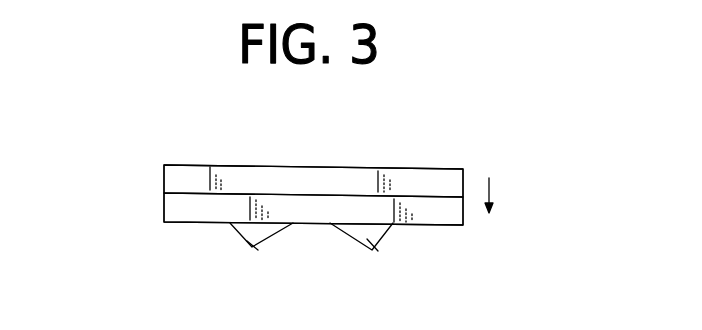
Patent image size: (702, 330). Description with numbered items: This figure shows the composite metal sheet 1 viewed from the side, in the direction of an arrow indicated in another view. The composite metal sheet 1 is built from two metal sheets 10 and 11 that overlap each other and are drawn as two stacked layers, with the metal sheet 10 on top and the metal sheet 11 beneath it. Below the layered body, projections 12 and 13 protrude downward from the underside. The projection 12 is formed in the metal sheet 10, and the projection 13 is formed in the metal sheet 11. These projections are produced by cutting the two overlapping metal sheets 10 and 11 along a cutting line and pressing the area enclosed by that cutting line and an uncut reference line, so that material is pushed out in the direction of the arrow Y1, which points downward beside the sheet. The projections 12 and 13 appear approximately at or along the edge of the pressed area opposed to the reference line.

The composite metal sheet 1 is at (453, 140).
The metal sheet 10 is at (172, 178).
The metal sheet 11 is at (180, 213).
The projection 12 is at (228, 228).
The projection 13 is at (247, 251).
The arrow Y1 is at (492, 190).